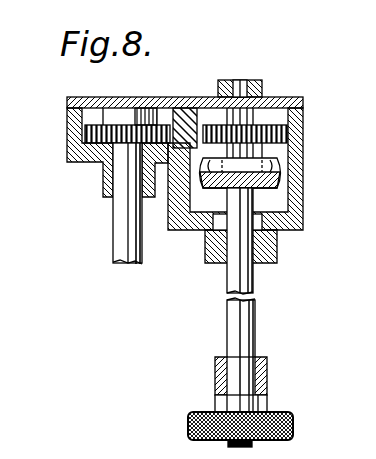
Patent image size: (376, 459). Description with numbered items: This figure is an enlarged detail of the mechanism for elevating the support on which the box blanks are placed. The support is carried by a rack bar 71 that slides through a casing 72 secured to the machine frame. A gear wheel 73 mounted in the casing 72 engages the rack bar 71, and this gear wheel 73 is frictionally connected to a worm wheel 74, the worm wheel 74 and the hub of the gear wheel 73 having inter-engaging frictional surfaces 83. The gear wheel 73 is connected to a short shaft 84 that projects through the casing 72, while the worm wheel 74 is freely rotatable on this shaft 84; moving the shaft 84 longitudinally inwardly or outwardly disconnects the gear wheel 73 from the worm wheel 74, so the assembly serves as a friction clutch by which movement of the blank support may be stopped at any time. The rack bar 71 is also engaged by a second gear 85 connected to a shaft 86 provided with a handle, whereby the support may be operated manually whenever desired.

The rack bar 71 is at (188, 108).
The casing 72 is at (303, 162).
The gear wheel 73 is at (270, 132).
The worm wheel 74 is at (277, 182).
The inter-engaging frictional surfaces 83 is at (222, 162).
The short shaft 84 is at (243, 280).
The second gear 85 is at (93, 150).
The shaft 86 is at (127, 232).